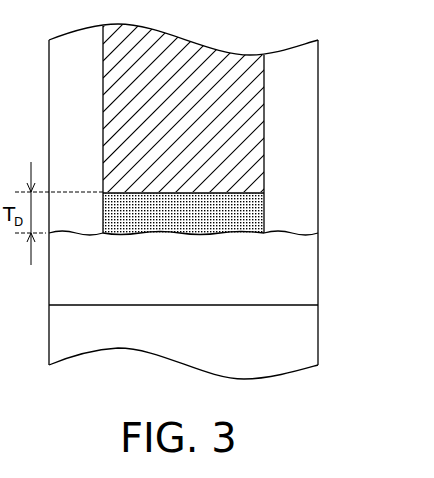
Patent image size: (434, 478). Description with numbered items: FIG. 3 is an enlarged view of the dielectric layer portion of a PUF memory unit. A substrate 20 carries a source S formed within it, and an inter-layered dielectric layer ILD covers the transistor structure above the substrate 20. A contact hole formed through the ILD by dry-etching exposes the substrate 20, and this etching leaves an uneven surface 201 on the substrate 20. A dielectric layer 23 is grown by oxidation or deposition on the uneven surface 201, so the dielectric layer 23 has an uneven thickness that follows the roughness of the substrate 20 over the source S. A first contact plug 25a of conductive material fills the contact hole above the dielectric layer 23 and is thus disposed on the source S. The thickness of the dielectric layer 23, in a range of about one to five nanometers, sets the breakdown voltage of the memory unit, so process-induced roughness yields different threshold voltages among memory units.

The first contact plug 25a is at (245, 70).
The inter-layered dielectric layer ILD is at (297, 113).
The dielectric layer 23 is at (264, 209).
The uneven surface 201 is at (255, 236).
The source S is at (183, 283).
The substrate 20 is at (297, 343).